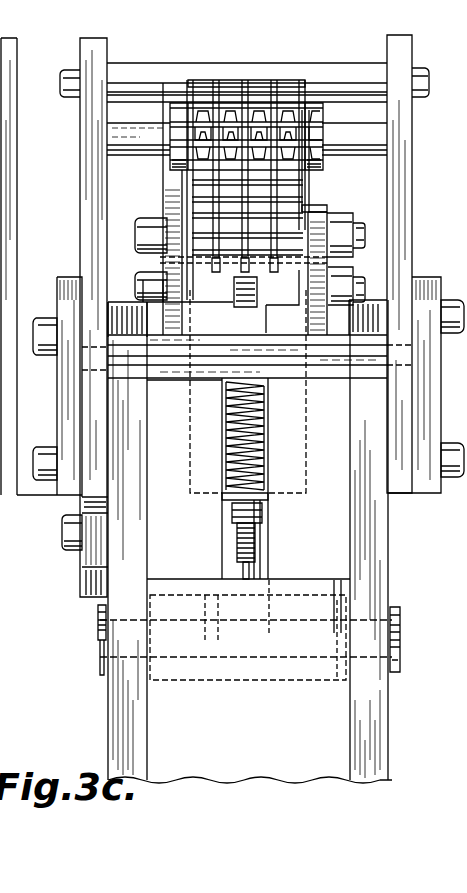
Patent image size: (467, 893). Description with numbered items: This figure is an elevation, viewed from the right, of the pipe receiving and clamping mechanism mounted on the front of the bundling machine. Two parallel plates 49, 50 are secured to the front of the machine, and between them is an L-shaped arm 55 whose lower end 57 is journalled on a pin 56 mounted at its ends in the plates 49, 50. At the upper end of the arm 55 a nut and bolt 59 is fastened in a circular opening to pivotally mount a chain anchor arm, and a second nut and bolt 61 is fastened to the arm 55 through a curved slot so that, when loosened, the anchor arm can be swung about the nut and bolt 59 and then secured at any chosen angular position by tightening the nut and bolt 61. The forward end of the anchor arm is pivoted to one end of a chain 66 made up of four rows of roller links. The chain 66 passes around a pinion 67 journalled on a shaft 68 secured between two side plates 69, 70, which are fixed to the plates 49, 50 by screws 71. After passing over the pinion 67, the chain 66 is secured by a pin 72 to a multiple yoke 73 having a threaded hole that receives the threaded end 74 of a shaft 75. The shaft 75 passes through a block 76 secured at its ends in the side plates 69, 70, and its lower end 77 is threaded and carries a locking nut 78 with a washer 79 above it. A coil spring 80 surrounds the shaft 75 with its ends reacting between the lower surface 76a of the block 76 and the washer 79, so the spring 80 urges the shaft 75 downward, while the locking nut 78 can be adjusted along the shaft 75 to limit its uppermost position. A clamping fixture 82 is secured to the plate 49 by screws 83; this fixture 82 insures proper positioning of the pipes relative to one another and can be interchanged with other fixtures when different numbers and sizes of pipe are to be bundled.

The parallel plate 49 is at (117, 602).
The parallel plate 50 is at (376, 563).
The L-shaped arm 55 is at (269, 568).
The pin 56 is at (401, 626).
The lower end of the arm 57 is at (277, 680).
The nut and bolt 59 is at (367, 237).
The nut and bolt 61 is at (362, 280).
The chain 66 is at (200, 203).
The pinion 67 is at (311, 110).
The shaft 68 is at (357, 147).
The side plate 69 is at (84, 176).
The side plate 70 is at (399, 137).
The screws 71 is at (45, 320).
The pin 72 is at (353, 216).
The multiple yoke 73 is at (202, 283).
The threaded end of the shaft 74 is at (258, 293).
The shaft 75 is at (240, 322).
The block 76 is at (287, 370).
The lower surface of the block 76a is at (203, 378).
The lower end of the shaft 77 is at (266, 545).
The locking nut 78 is at (268, 516).
The washer 79 is at (269, 490).
The coil spring 80 is at (268, 436).
The clamping fixture 82 is at (90, 563).
The screws 83 is at (63, 535).